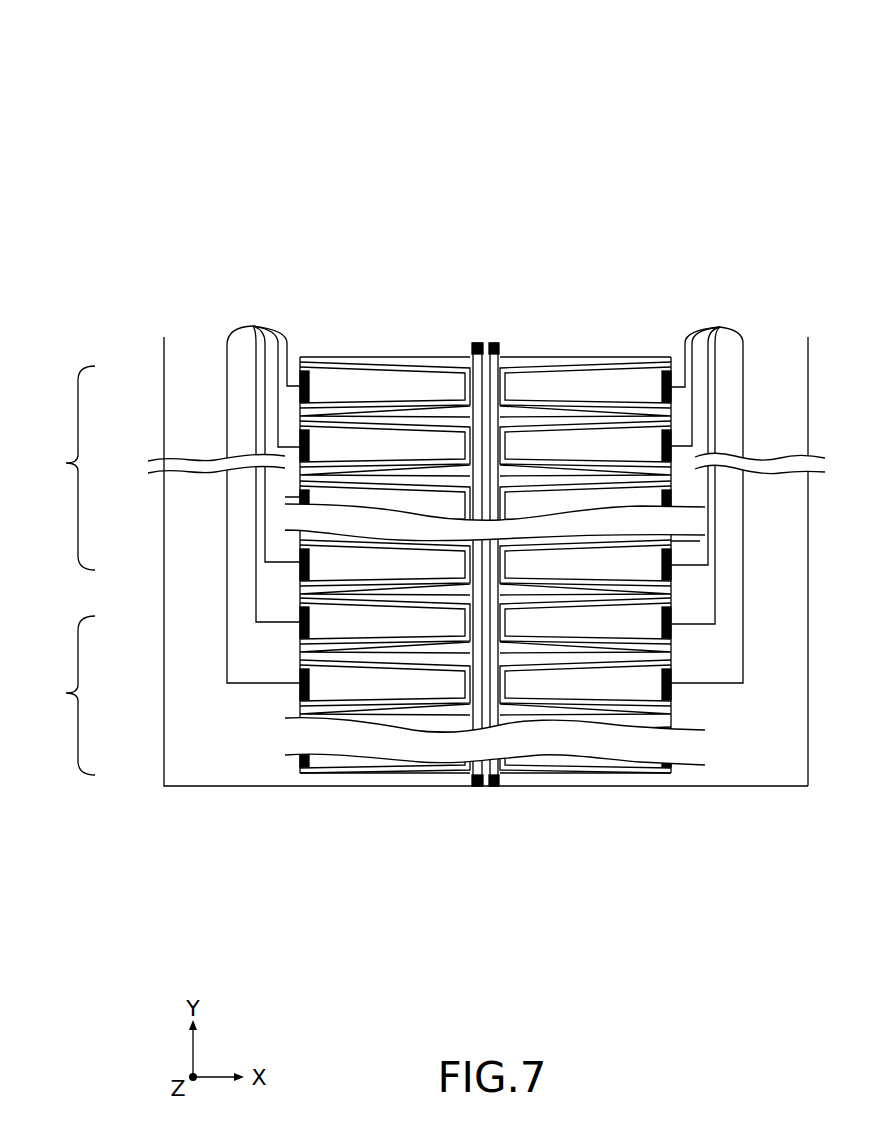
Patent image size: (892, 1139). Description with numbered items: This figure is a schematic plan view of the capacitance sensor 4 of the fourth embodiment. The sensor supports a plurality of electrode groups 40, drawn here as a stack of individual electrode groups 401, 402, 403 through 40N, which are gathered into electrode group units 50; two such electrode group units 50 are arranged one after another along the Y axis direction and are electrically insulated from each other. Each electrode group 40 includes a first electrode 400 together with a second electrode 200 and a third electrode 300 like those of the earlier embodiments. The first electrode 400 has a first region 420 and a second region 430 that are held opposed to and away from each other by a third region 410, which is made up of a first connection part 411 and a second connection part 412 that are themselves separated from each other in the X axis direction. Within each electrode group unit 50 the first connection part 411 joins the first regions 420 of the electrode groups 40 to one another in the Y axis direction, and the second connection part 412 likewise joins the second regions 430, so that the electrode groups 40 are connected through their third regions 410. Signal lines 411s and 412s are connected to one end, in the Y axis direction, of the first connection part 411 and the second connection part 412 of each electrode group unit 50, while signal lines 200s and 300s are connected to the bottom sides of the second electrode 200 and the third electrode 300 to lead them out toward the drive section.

The capacitance sensor 4 is at (489, 79).
The electrode group 40 is at (297, 172).
The electrode group unit 50 is at (63, 570).
The second electrode 200 is at (338, 353).
The third electrode 300 is at (631, 392).
The first electrode 400 is at (630, 216).
The third region 410 is at (595, 262).
The first connection part 411 is at (473, 345).
The second connection part 412 is at (500, 345).
The first region 420 is at (382, 353).
The second region 430 is at (597, 353).
The signal line 411s is at (164, 340).
The signal line 412s is at (493, 343).
The signal line 200s is at (254, 329).
The signal line 300s is at (720, 329).
The electrode group 401 is at (300, 378).
The electrode group 402 is at (300, 437).
The electrode group 403 is at (300, 491).
The electrode group 40N is at (300, 556).